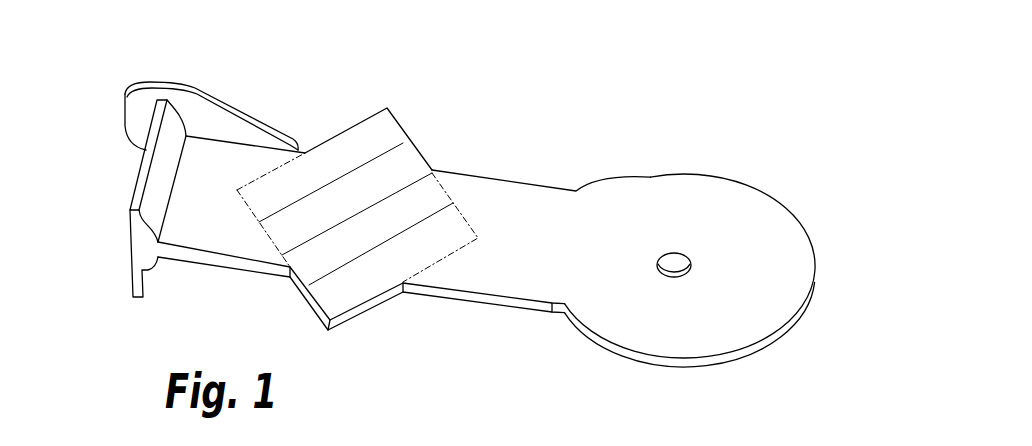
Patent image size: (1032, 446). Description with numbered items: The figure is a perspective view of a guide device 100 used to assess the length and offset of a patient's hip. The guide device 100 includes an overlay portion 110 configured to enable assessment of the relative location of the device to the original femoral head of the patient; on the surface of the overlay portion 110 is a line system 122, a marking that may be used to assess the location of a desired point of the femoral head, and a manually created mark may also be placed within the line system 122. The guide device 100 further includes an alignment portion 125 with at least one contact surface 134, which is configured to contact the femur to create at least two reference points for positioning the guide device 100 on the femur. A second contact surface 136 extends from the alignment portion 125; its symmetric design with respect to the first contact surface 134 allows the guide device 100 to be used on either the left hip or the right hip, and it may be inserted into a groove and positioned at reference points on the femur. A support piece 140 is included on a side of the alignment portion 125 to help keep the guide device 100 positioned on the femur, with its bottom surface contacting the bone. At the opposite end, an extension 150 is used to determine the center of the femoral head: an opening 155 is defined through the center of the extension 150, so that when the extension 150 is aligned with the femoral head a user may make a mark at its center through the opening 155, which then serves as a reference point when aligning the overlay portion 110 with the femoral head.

The guide device 100 is at (421, 225).
The overlay portion 110 is at (358, 283).
The line system 122 is at (382, 198).
The alignment portion 125 is at (217, 217).
The contact surface 134 is at (147, 279).
The second contact surface 136 is at (162, 177).
The support piece 140 is at (200, 112).
The extension 150 is at (668, 328).
The opening 155 is at (675, 264).